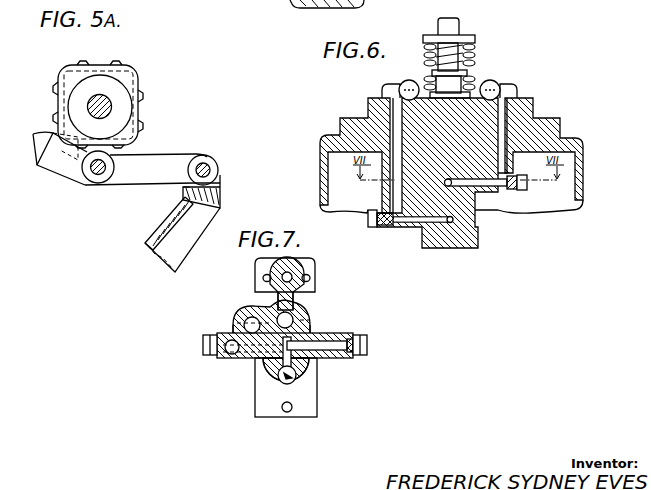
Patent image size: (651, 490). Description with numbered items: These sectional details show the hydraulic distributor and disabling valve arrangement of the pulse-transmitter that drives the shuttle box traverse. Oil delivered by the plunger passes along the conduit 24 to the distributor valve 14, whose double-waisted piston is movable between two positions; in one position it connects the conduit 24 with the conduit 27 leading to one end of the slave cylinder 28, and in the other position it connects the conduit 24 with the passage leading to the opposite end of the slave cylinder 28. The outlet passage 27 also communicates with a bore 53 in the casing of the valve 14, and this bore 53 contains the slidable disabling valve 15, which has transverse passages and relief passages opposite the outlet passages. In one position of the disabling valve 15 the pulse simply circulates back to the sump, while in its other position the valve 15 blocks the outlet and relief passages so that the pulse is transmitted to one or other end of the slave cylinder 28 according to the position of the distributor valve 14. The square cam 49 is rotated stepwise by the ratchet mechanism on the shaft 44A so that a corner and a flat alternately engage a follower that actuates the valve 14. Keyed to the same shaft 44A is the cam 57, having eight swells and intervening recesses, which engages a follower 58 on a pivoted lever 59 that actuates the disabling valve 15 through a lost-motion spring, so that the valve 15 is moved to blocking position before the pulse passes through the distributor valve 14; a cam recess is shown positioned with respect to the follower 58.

In FIG. 5A, the cam 57 is at (105, 64).
In FIG. 5A, the shaft 44A is at (107, 100).
In FIG. 5A, the square cam 49 is at (64, 96).
In FIG. 5A, the pivoted lever 59 is at (152, 164).
In FIG. 5A, the follower 58 is at (100, 176).
In FIG. 6, the slave cylinder 28 is at (449, 221).
In FIG. 7, the slave cylinder 28 is at (233, 353).
In FIG. 6, the conduit 27 is at (492, 100).
In FIG. 7, the conduit 27 is at (338, 352).
In FIG. 7, the conduit 24 is at (290, 279).
In FIG. 7, the distributor valve 14 is at (286, 320).
In FIG. 7, the bore 53 is at (293, 379).
In FIG. 7, the disabling valve 15 is at (287, 386).